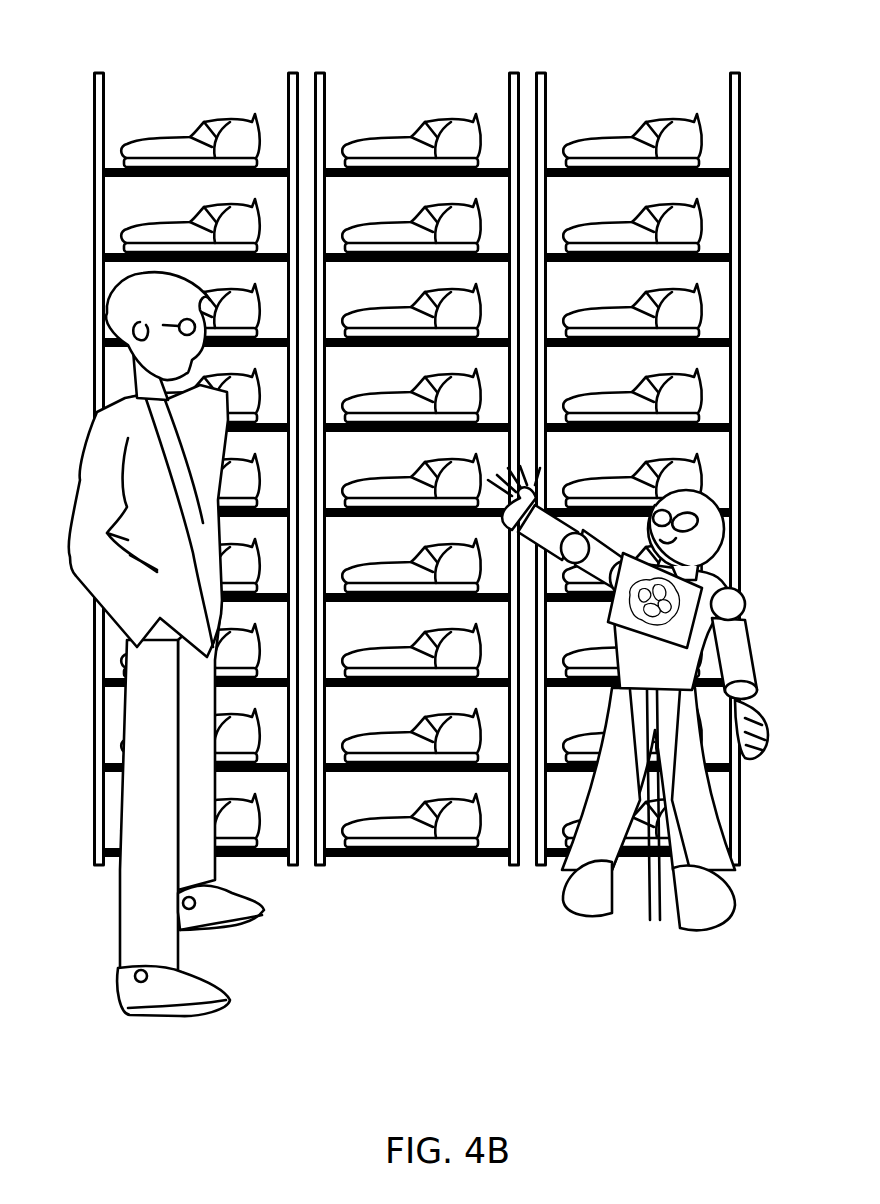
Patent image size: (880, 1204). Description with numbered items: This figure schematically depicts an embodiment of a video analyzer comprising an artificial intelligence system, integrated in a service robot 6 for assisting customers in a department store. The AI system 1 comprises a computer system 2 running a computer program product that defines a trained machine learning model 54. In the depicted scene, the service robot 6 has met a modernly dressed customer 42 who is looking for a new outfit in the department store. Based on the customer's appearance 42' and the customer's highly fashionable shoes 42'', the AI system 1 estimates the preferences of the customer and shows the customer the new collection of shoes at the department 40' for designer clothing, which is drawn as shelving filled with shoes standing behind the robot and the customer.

The department 40' is at (417, 443).
The customer 42 is at (195, 636).
The customer's appearance 42' is at (132, 528).
The customer's highly fashionable shoes 42'' is at (235, 950).
The service robot 6 is at (635, 684).
The AI system 1 is at (608, 617).
The trained machine learning model 54 is at (678, 592).
The computer system 2 is at (683, 652).